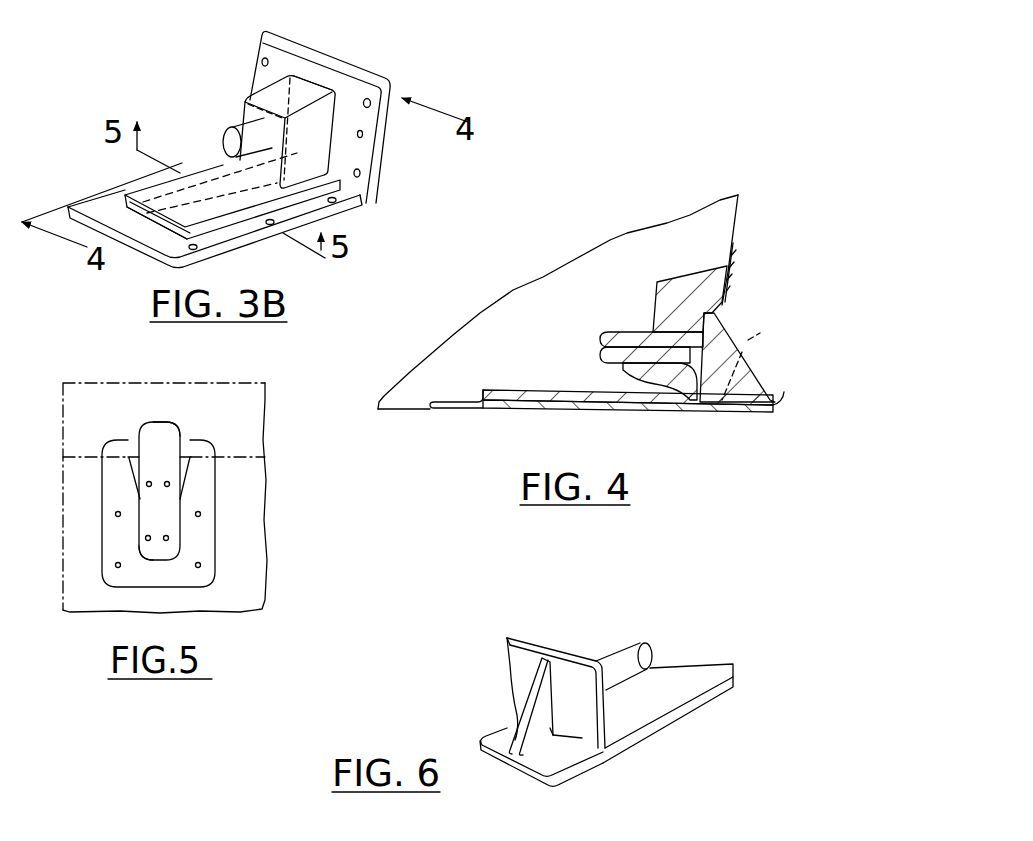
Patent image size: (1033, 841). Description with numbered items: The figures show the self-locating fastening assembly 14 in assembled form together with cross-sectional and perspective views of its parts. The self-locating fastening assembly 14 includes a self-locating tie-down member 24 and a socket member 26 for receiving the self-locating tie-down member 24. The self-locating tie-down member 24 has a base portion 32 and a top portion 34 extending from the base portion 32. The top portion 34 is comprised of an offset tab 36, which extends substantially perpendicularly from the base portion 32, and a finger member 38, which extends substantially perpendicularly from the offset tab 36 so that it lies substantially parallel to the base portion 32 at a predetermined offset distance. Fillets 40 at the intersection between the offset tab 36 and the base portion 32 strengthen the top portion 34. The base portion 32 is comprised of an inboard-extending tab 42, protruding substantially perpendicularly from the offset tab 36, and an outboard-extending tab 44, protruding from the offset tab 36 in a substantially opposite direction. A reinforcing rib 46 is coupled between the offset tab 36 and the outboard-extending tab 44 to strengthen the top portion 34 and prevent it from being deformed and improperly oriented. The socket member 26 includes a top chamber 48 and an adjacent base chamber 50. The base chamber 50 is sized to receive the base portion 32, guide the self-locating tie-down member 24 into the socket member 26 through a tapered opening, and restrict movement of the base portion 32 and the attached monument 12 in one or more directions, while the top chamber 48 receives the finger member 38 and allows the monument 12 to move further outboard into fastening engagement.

In FIG. 4, the monument 12 is at (657, 258).
In FIG. 5, the monument 12 is at (98, 424).
In FIG. 3B, the self-locating fastening assembly 14 is at (160, 51).
In FIG. 3B, the self-locating tie-down member 24 is at (272, 93).
In FIG. 4, the self-locating tie-down member 24 is at (731, 313).
In FIG. 5, the self-locating tie-down member 24 is at (158, 419).
In FIG. 6, the self-locating tie-down member 24 is at (501, 634).
In FIG. 3B, the socket member 26 is at (253, 33).
In FIG. 4, the socket member 26 is at (743, 257).
In FIG. 5, the socket member 26 is at (100, 564).
In FIG. 3B, the base portion 32 is at (372, 160).
In FIG. 4, the base portion 32 is at (639, 387).
In FIG. 6, the base portion 32 is at (691, 655).
In FIG. 3B, the top portion 34 is at (308, 80).
In FIG. 4, the offset tab 36 is at (724, 300).
In FIG. 6, the offset tab 36 is at (507, 660).
In FIG. 3B, the finger member 38 is at (247, 137).
In FIG. 6, the finger member 38 is at (617, 646).
In FIG. 4, the fillets 40 is at (755, 364).
In FIG. 6, the fillets 40 is at (517, 716).
In FIG. 4, the inboard-extending tab 42 is at (690, 419).
In FIG. 5, the inboard-extending tab 42 is at (140, 532).
In FIG. 6, the inboard-extending tab 42 is at (610, 763).
In FIG. 4, the outboard-extending tab 44 is at (772, 419).
In FIG. 5, the outboard-extending tab 44 is at (181, 432).
In FIG. 6, the outboard-extending tab 44 is at (555, 789).
In FIG. 4, the reinforcing rib 46 is at (738, 350).
In FIG. 6, the reinforcing rib 46 is at (528, 695).
In FIG. 4, the top chamber 48 is at (597, 283).
In FIG. 3B, the base chamber 50 is at (126, 198).
In FIG. 4, the base chamber 50 is at (420, 396).
In FIG. 5, the base chamber 50 is at (128, 455).